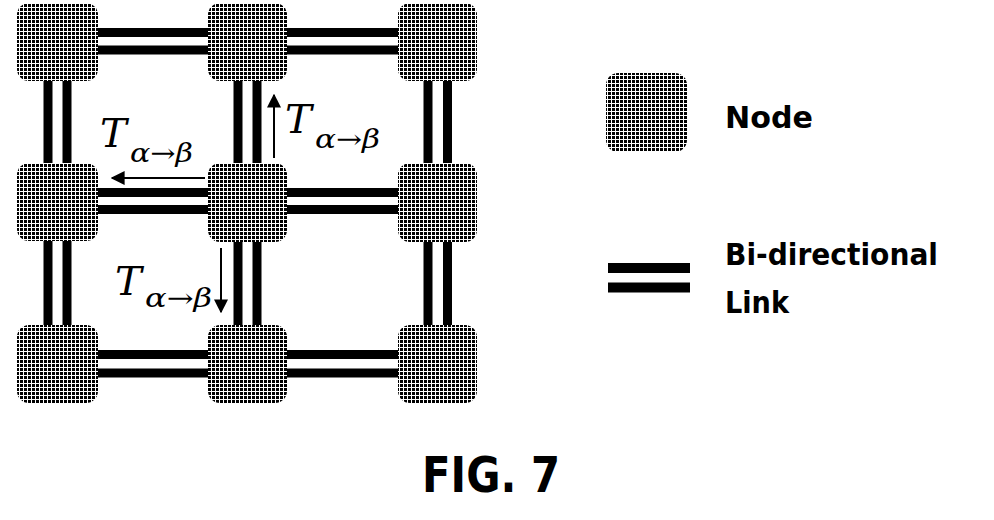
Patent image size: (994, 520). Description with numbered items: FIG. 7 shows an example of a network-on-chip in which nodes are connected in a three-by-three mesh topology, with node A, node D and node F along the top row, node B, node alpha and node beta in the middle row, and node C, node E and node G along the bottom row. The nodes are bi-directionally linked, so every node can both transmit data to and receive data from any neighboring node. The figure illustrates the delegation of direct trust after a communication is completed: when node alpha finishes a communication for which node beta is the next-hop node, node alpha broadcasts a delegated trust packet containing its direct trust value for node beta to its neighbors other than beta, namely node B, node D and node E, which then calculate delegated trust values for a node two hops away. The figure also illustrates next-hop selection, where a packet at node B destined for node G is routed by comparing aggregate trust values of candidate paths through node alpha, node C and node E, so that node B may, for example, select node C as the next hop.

The node A is at (57, 42).
The node B is at (57, 202).
The node C is at (57, 364).
The node D is at (247, 42).
The node E is at (247, 364).
The node F is at (437, 42).
The node G is at (437, 364).